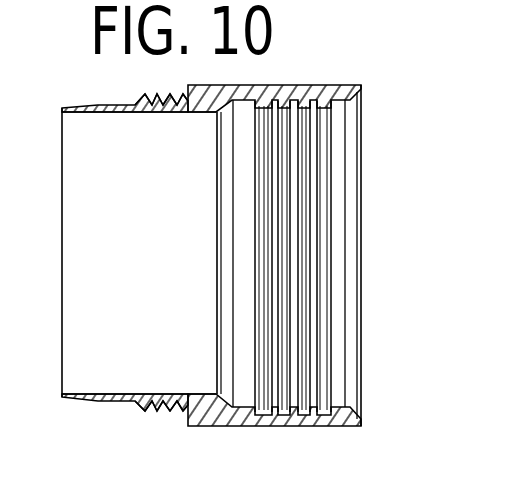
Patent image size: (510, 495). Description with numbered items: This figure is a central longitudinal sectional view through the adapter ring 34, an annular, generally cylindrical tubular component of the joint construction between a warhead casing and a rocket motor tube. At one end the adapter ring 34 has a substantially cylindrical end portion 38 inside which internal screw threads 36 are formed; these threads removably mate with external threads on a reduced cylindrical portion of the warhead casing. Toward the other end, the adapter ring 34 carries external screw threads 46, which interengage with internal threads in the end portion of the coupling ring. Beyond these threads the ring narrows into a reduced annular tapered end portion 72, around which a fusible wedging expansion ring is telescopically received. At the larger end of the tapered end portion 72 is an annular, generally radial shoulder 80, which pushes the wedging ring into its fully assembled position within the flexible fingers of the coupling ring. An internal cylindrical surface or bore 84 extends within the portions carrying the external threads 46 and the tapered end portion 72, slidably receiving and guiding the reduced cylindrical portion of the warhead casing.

The adapter ring 34 is at (296, 79).
The internal screw threads 36 is at (322, 342).
The cylindrical end portion 38 is at (305, 427).
The external screw threads 46 is at (167, 411).
The reduced annular tapered end portion 72 is at (88, 105).
The annular radial shoulder 80 is at (98, 402).
The internal cylindrical surface or bore 84 is at (108, 113).